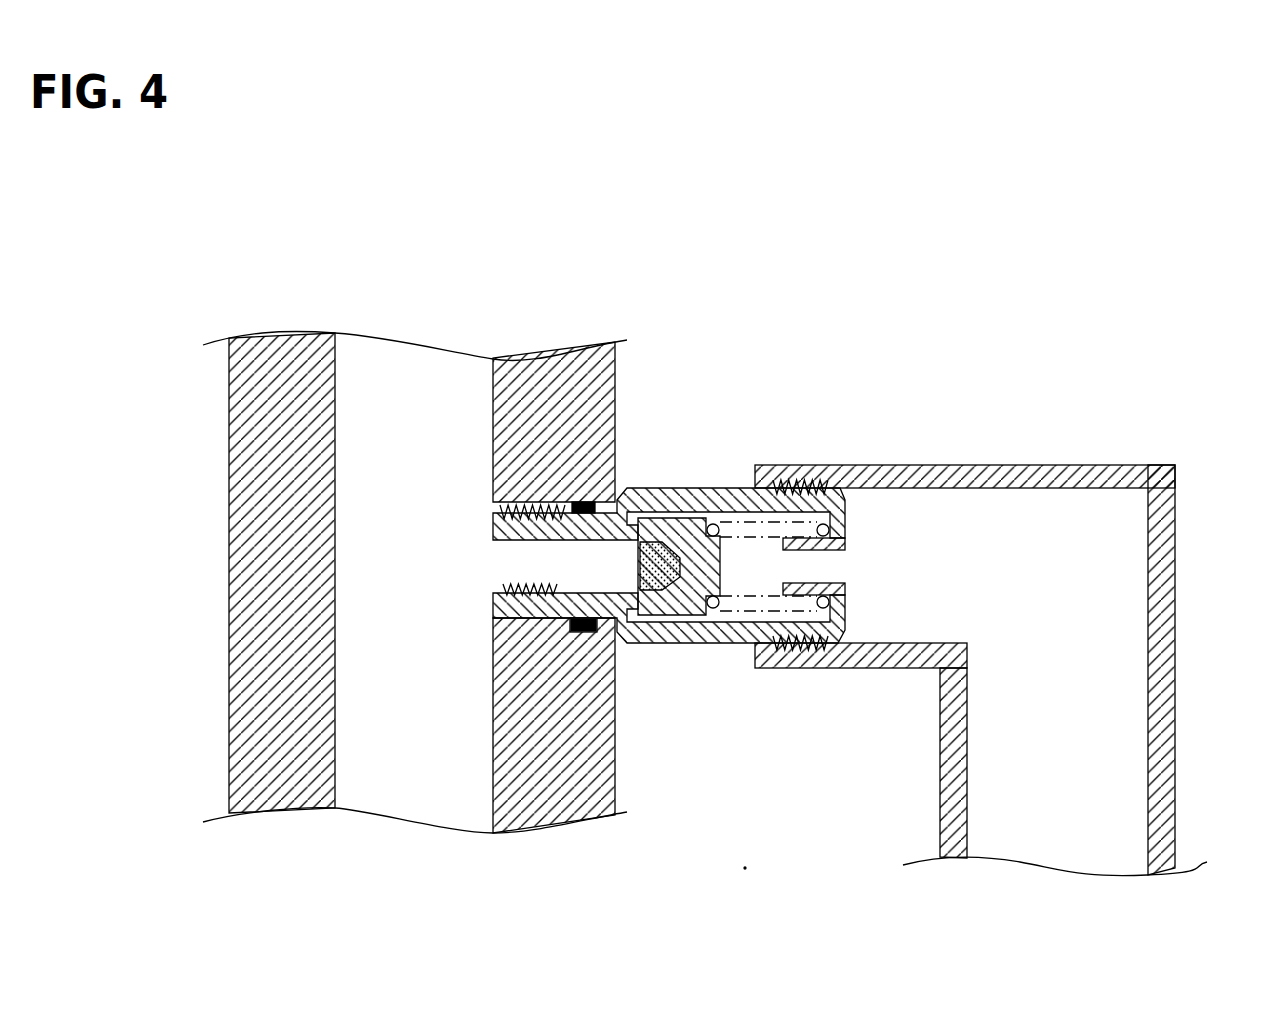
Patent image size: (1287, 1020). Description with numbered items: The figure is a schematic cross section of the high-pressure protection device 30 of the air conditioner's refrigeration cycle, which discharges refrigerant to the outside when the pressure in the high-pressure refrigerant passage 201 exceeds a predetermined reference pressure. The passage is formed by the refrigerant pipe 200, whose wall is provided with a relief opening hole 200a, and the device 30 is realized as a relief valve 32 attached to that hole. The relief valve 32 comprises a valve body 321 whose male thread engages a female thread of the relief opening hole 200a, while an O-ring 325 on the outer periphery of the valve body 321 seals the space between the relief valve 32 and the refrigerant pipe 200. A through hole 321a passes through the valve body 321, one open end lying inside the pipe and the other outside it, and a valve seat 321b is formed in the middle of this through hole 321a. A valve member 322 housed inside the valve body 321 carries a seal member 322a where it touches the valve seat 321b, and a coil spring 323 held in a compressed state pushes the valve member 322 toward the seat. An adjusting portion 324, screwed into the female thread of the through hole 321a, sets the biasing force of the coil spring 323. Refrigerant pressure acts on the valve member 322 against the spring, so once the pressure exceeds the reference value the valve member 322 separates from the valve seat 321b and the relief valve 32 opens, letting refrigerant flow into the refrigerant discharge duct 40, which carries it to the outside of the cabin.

The refrigerant pipe 200 is at (226, 414).
The high-pressure refrigerant passage 201 is at (402, 370).
The relief opening hole 200a is at (530, 604).
The high-pressure protection device 30 is at (514, 534).
The relief valve 32 is at (514, 534).
The valve body 321 is at (730, 495).
The through hole 321a is at (517, 540).
The valve seat 321b is at (640, 572).
The valve member 322 is at (685, 618).
The seal member 322a is at (667, 600).
The coil spring 323 is at (720, 605).
The adjusting portion 324 is at (850, 538).
The O-ring 325 is at (592, 500).
The refrigerant discharge duct 40 is at (1180, 585).